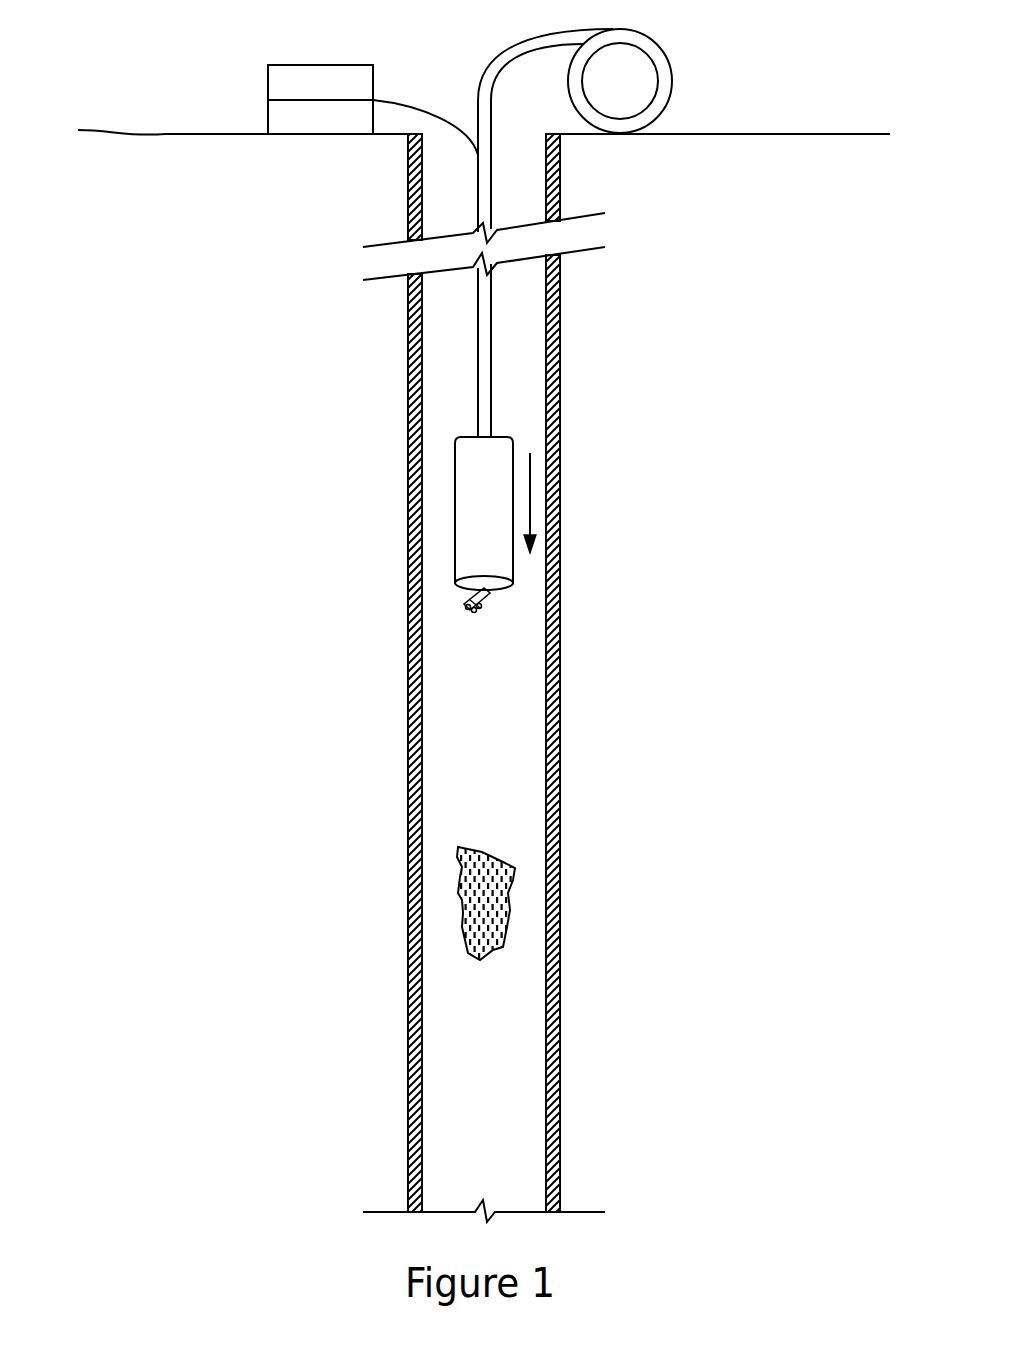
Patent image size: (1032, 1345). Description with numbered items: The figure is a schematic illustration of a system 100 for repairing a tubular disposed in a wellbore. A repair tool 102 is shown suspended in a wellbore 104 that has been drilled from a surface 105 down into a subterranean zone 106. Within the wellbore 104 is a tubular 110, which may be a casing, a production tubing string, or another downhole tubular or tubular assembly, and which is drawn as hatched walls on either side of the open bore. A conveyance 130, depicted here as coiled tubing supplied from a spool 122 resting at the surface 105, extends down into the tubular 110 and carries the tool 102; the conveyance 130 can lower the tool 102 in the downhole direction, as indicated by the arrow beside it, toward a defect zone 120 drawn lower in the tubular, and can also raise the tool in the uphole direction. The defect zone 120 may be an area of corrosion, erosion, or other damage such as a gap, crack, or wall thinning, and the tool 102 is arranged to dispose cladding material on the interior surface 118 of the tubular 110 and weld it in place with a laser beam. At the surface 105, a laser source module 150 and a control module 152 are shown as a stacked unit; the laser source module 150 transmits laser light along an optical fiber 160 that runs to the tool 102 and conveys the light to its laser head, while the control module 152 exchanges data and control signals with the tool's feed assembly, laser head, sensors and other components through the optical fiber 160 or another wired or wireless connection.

The system 100 is at (188, 242).
The repair tool 102 is at (457, 497).
The wellbore 104 is at (333, 747).
The surface 105 is at (135, 130).
The subterranean zone 106 is at (688, 356).
The tubular 110 is at (408, 660).
The interior surface 118 is at (490, 815).
The defect zone 120 is at (508, 913).
The spool 122 is at (666, 58).
The conveyance 130 is at (477, 335).
The laser source module 150 is at (342, 127).
The control module 152 is at (342, 93).
The optical fiber 160 is at (421, 105).